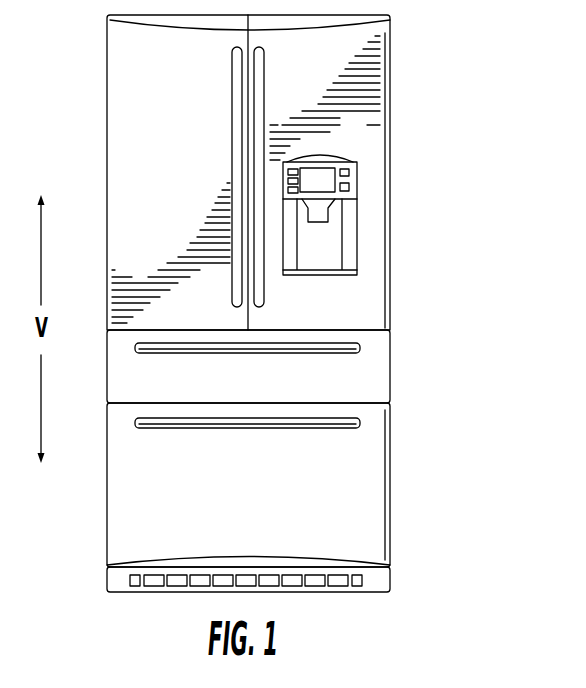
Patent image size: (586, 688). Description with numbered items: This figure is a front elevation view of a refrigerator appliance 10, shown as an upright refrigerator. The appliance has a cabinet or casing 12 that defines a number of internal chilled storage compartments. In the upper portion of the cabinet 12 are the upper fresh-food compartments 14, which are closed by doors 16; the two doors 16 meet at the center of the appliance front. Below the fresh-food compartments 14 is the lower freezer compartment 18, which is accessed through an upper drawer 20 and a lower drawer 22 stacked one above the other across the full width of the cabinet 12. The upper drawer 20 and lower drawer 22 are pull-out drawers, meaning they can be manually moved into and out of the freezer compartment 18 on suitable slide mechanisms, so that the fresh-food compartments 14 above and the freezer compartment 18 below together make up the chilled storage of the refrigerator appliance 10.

The refrigerator appliance 10 is at (281, 303).
The cabinet 12 is at (393, 250).
The upper fresh-food compartment 14 is at (127, 151).
The door 16 is at (183, 188).
The lower freezer compartment 18 is at (288, 366).
The upper drawer 20 is at (152, 391).
The lower drawer 22 is at (262, 508).